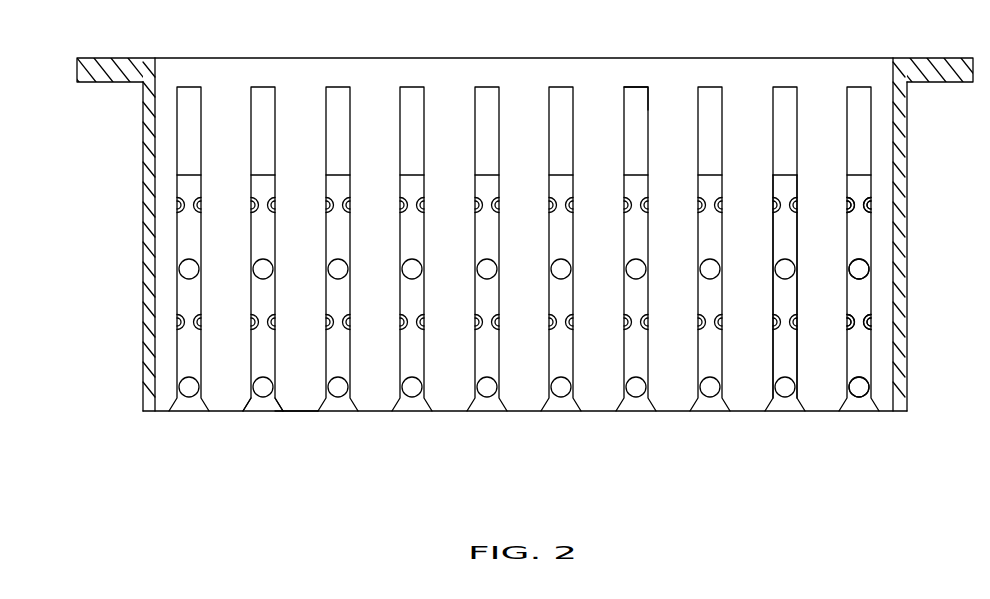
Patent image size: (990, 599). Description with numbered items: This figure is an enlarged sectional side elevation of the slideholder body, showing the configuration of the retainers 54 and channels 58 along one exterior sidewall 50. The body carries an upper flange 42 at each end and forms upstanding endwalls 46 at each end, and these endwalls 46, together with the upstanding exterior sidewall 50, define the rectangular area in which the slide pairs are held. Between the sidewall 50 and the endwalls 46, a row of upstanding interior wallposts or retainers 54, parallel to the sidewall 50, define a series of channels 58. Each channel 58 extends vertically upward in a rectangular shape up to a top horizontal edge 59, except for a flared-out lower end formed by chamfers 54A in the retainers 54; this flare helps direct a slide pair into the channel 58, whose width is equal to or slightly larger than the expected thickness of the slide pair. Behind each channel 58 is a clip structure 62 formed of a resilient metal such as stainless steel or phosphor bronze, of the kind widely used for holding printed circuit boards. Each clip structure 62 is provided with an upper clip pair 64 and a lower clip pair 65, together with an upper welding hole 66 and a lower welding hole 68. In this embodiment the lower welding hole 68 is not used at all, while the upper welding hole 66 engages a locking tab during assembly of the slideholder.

The upper flange 42 is at (79, 58).
The upstanding endwall 46 is at (143, 165).
The upstanding exterior sidewall 50 is at (262, 104).
The interior wallpost or retainer 54 is at (318, 104).
The chamfer 54A is at (276, 412).
The channel 58 is at (788, 362).
The top horizontal edge of channel 59 is at (637, 85).
The clip structure 62 is at (858, 412).
The upper clip pair 64 is at (868, 205).
The lower clip pair 65 is at (866, 320).
The upper welding hole 66 is at (860, 269).
The lower welding hole 68 is at (862, 388).